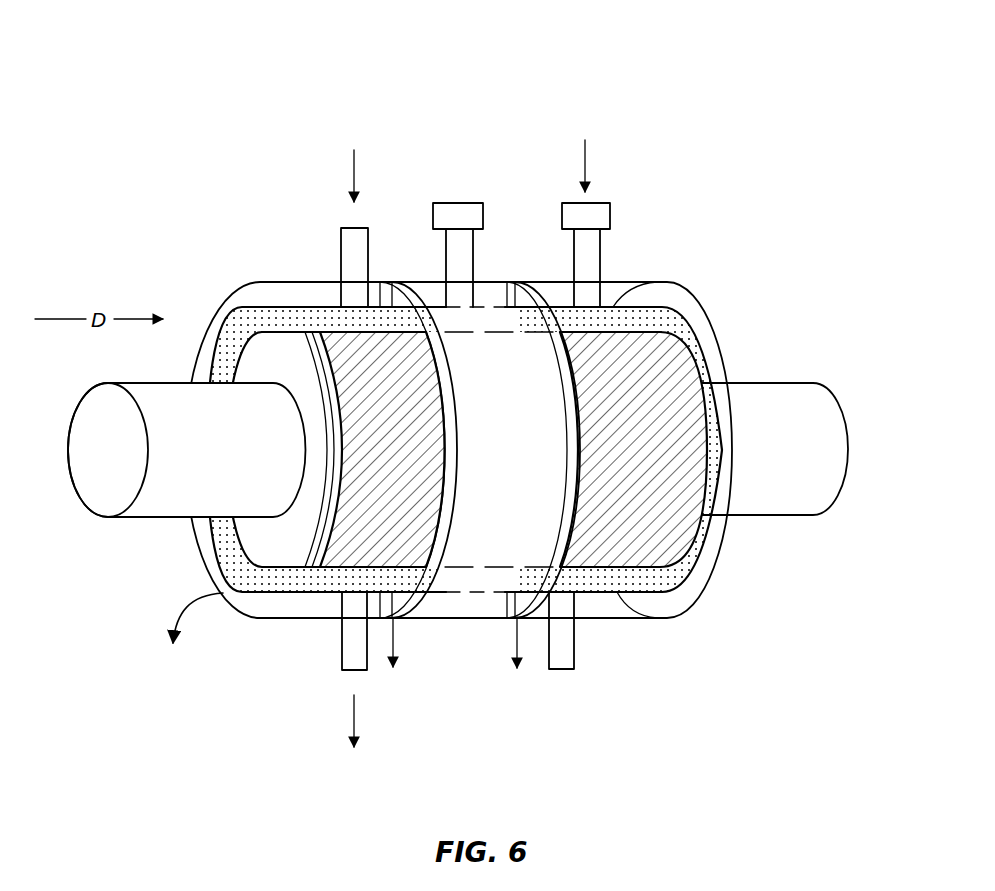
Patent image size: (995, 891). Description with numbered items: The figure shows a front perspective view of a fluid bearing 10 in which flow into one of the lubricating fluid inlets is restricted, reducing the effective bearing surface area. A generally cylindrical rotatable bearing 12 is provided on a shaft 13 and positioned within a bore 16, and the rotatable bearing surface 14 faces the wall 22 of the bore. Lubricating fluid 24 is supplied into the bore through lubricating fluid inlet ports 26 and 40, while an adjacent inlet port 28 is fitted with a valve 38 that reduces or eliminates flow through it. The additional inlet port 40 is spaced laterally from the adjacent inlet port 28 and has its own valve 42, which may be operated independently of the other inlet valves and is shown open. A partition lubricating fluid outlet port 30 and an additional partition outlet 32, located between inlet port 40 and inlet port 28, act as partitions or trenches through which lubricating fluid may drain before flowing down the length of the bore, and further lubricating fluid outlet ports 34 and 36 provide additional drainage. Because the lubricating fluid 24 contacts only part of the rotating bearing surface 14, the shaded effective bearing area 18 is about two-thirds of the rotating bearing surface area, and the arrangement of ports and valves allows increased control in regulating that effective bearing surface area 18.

The fluid bearing 10 is at (205, 75).
The rotatable bearing 12 is at (667, 368).
The shaft 13 is at (160, 515).
The rotatable bearing surface 14 is at (478, 517).
The bore 16 is at (252, 322).
The effective bearing area 18 is at (360, 517).
The wall 22 is at (275, 320).
The lubricating fluid 24 is at (333, 320).
The lubricating fluid inlet port 26 is at (340, 228).
The lubricating fluid inlet port 28 is at (473, 240).
The partition lubricating fluid outlet port 30 is at (402, 617).
The additional partition outlet 32 is at (508, 617).
The lubricating fluid outlet port 34 is at (342, 670).
The lubricating fluid outlet port 36 is at (575, 669).
The valve 38 is at (452, 203).
The inlet port 40 is at (600, 252).
The valve 42 is at (610, 203).